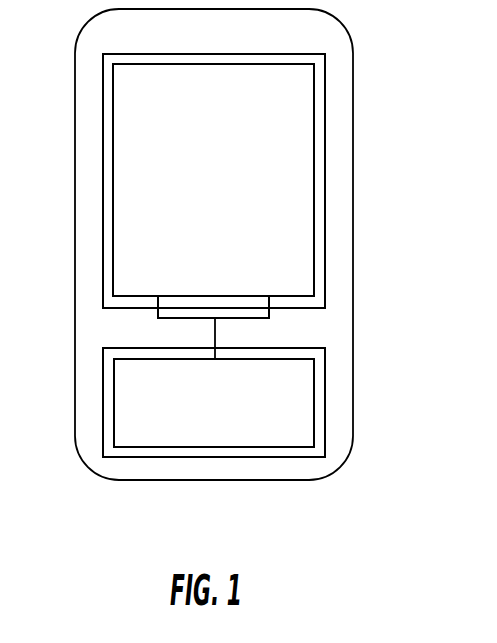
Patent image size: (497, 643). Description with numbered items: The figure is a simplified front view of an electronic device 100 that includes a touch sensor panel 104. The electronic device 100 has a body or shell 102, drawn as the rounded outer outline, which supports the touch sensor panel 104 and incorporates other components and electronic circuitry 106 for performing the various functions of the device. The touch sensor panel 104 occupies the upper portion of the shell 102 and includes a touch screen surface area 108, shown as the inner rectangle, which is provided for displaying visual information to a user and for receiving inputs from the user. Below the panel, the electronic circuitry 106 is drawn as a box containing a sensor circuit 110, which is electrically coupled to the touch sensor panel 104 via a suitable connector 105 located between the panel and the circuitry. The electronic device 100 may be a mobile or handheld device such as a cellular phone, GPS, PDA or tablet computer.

The electronic device 100 is at (250, 262).
The body or shell 102 is at (353, 140).
The touch sensor panel 104 is at (325, 192).
The connector 105 is at (269, 313).
The electronic circuitry 106 is at (325, 368).
The touch screen surface area 108 is at (314, 238).
The sensor circuit 110 is at (235, 431).